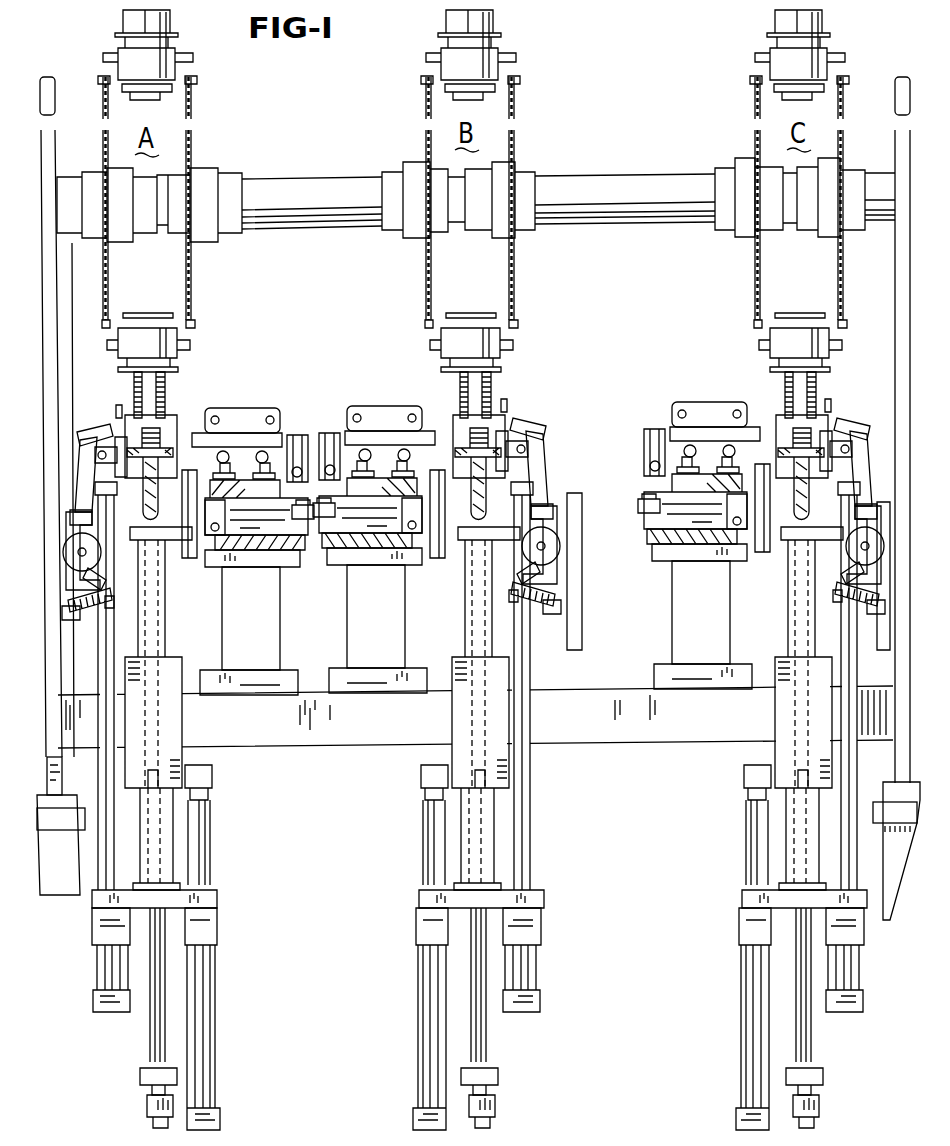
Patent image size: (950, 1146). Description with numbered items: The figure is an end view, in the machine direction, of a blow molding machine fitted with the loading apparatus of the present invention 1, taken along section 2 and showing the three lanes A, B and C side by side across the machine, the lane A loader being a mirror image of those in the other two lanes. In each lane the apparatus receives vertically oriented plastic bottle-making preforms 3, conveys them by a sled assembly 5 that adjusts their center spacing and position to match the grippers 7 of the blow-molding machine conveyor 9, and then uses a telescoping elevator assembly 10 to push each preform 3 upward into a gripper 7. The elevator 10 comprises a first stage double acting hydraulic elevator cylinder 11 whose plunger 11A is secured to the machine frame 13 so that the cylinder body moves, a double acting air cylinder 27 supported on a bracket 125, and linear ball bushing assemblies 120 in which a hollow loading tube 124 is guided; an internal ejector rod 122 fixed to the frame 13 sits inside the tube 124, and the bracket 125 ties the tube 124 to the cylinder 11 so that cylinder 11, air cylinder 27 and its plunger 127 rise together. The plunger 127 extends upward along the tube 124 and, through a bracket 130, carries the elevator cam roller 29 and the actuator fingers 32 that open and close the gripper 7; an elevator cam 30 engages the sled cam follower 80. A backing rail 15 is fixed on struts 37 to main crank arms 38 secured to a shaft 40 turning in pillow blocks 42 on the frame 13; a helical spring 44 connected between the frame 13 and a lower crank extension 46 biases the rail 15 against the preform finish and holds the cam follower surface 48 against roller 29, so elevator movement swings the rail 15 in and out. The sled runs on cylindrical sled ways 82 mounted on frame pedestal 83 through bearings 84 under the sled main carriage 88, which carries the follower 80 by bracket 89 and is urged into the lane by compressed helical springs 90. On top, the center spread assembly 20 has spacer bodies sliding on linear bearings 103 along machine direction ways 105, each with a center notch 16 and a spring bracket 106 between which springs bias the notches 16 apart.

The present invention 1 is at (272, 132).
The section line 2 is at (62, 253).
The preform 3 is at (145, 501).
The sled assembly 5 is at (470, 509).
The gripper 7 is at (165, 18).
The blow-molding machine conveyor 9 is at (193, 128).
The elevator assembly 10 is at (479, 835).
The first stage hydraulic elevator cylinder 11 is at (212, 1032).
The plunger 11A is at (212, 857).
The machine frame 13 is at (50, 113).
The backing rail 15 is at (116, 436).
The center notch 16 is at (178, 435).
The center spread assembly 20 is at (245, 403).
The double acting air cylinder 27 is at (100, 968).
The elevator cam roller 29 is at (97, 455).
The elevator cam 30 is at (192, 545).
The actuator finger 32 is at (163, 392).
The strut 37 is at (77, 435).
The main crank arm 38 is at (82, 470).
The shaft 40 is at (66, 549).
The pillow block 42 is at (68, 570).
The helical spring 44 is at (73, 612).
The lower crank extension 46 is at (70, 605).
The cam follower surface 48 is at (72, 518).
The cam follower 80 is at (232, 555).
The sled way 82 is at (373, 520).
The frame pedestal 83 is at (267, 668).
The bearing 84 is at (292, 550).
The sled main carriage 88 is at (652, 468).
The bracket 89 is at (217, 502).
The compressed helical spring 90 is at (655, 535).
The cylindrical linear bearing 103 is at (712, 442).
The machine direction cylindrical way 105 is at (688, 462).
The spring bracket 106 is at (222, 407).
The linear ball bushing assembly 120 is at (182, 735).
The internal ejector rod 122 is at (168, 672).
The hollow loading tube 124 is at (165, 612).
The bracket 125 is at (217, 893).
The plunger 127 is at (105, 863).
The bracket 130 is at (117, 412).